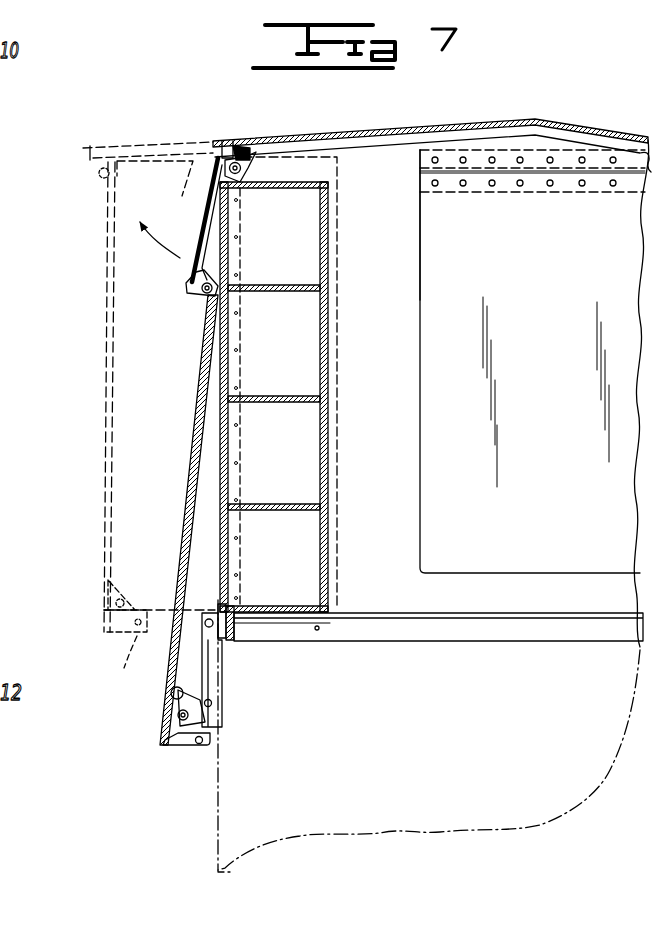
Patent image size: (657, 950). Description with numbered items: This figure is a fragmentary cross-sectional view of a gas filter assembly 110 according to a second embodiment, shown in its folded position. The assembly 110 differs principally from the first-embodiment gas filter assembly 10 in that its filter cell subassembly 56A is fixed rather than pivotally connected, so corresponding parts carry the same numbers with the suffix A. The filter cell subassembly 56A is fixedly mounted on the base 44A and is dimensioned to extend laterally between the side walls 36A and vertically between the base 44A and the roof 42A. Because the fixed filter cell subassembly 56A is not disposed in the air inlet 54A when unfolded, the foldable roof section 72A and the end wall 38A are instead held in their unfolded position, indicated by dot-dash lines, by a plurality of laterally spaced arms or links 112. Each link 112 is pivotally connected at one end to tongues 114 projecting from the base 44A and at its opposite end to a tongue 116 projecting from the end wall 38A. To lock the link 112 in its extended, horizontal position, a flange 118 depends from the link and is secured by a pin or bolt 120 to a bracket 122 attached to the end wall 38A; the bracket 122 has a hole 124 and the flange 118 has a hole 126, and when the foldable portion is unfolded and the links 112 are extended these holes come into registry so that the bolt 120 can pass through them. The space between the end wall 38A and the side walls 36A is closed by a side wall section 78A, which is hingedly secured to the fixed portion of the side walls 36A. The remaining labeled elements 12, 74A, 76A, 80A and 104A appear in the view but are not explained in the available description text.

The gas filter assembly 10 is at (9, 50).
The vehicle body 12 is at (11, 692).
The gas filter assembly 110 is at (200, 128).
The upper hinge pin 74A is at (246, 152).
The roof 42A is at (436, 129).
The roof section 72A is at (205, 216).
The pivot 76A is at (97, 178).
The end wall 38A is at (200, 360).
The side wall 104A is at (420, 264).
The side wall section 78A is at (338, 364).
The filter cell subassembly 56A is at (340, 428).
The door frame 80A is at (245, 487).
The air inlet 54A is at (135, 602).
The tongues 114 is at (234, 616).
The bracket 122 is at (116, 636).
The pin or bolt 120 is at (116, 665).
The tongue 116 is at (178, 692).
The base 44A is at (235, 617).
The arms or links 112 is at (222, 664).
The hole 126 is at (212, 704).
The side walls 36A is at (420, 607).
The flange 118 is at (210, 724).
The hole 124 is at (192, 750).